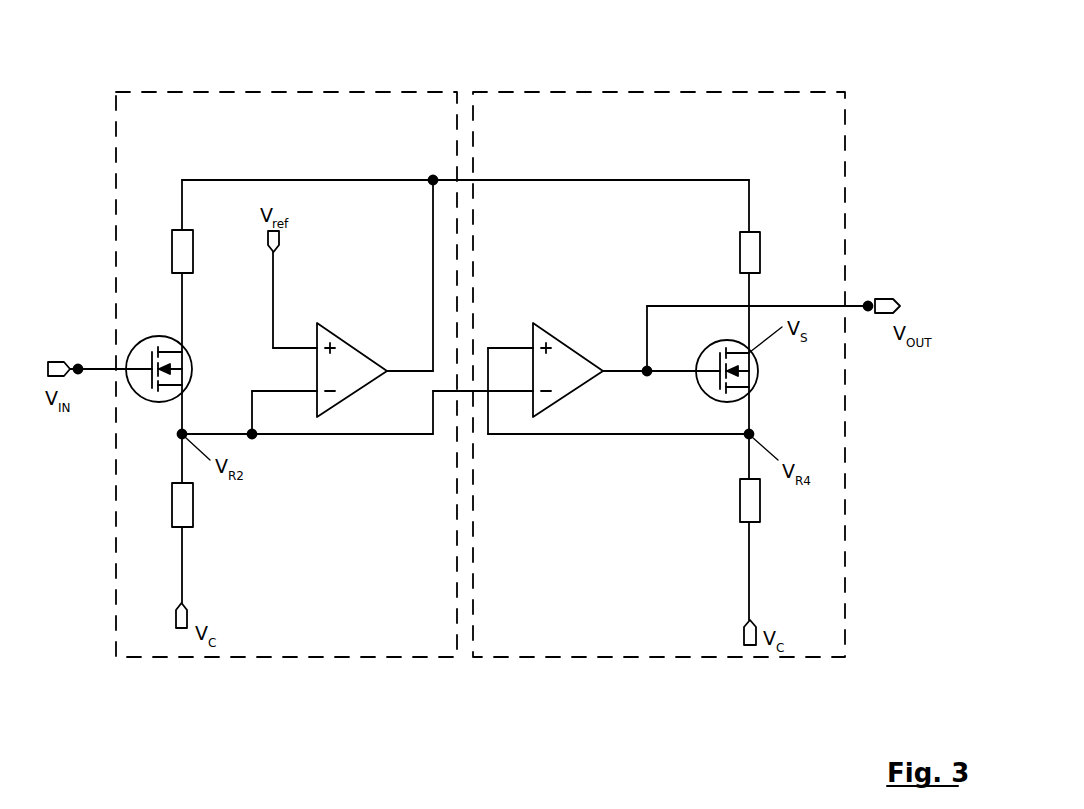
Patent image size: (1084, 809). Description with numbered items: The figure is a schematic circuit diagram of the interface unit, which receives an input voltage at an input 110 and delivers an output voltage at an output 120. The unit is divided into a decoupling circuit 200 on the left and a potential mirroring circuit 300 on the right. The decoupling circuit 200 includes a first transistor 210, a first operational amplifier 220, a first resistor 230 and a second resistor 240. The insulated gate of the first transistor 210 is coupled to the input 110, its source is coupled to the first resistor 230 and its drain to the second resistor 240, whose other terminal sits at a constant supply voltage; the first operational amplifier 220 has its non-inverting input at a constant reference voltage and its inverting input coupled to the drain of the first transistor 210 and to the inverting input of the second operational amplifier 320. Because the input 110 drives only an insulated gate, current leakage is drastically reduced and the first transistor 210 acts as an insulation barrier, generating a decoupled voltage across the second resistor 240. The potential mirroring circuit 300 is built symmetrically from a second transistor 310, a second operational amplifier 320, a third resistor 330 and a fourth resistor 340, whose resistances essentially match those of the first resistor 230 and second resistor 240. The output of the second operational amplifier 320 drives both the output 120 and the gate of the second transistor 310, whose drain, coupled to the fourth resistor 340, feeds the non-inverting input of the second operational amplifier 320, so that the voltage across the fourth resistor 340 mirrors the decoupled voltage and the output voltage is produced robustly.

The input 110 is at (79, 364).
The output 120 is at (869, 302).
The decoupling circuit 200 is at (143, 92).
The first transistor 210 is at (186, 380).
The first operational amplifier 220 is at (331, 336).
The first resistor 230 is at (193, 253).
The second resistor 240 is at (193, 497).
The potential mirroring circuit 300 is at (795, 92).
The second transistor 310 is at (756, 386).
The second operational amplifier 320 is at (546, 336).
The third resistor 330 is at (760, 250).
The fourth resistor 340 is at (760, 510).